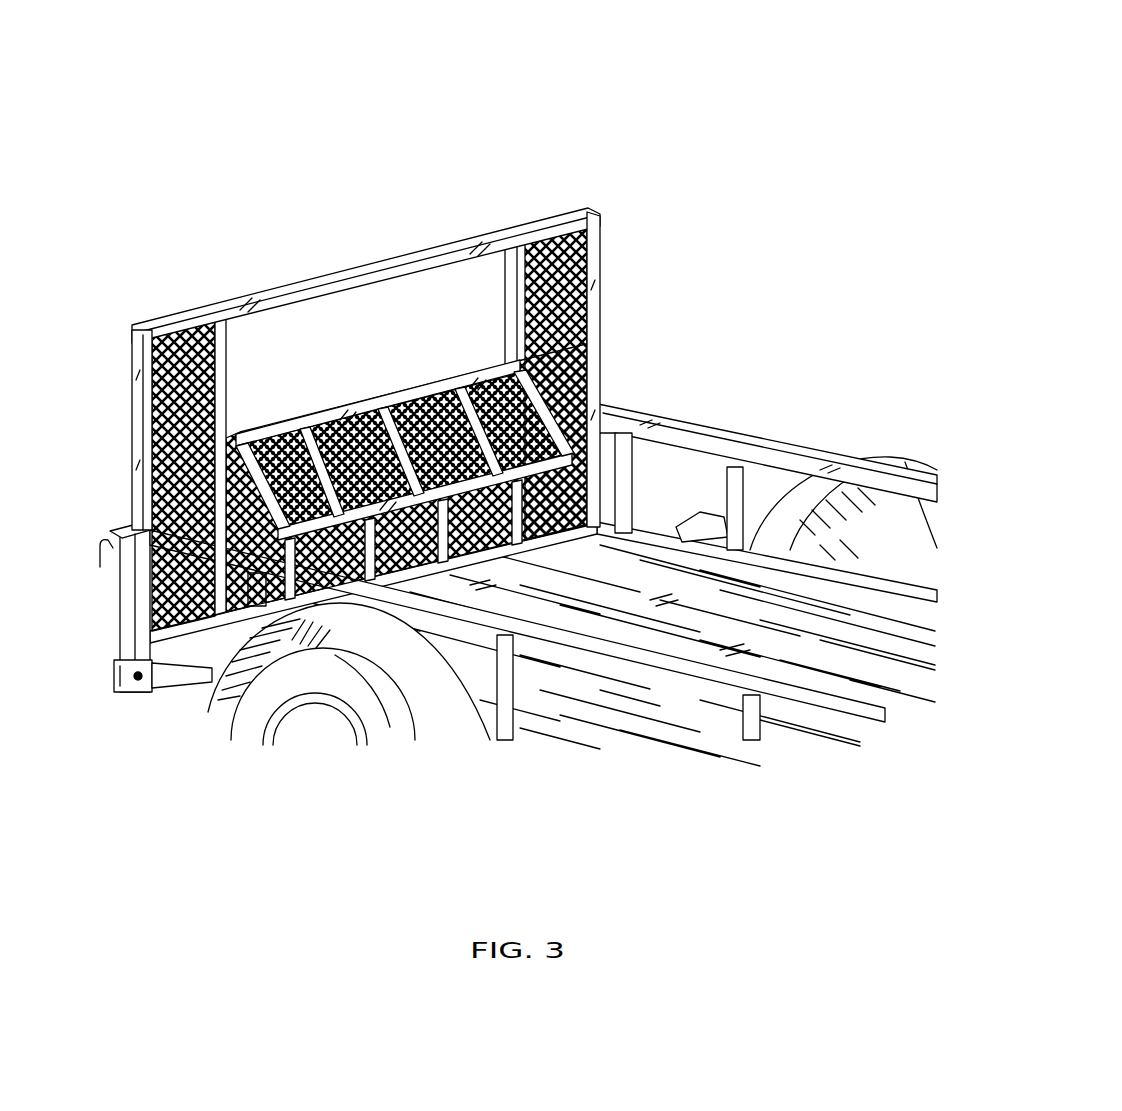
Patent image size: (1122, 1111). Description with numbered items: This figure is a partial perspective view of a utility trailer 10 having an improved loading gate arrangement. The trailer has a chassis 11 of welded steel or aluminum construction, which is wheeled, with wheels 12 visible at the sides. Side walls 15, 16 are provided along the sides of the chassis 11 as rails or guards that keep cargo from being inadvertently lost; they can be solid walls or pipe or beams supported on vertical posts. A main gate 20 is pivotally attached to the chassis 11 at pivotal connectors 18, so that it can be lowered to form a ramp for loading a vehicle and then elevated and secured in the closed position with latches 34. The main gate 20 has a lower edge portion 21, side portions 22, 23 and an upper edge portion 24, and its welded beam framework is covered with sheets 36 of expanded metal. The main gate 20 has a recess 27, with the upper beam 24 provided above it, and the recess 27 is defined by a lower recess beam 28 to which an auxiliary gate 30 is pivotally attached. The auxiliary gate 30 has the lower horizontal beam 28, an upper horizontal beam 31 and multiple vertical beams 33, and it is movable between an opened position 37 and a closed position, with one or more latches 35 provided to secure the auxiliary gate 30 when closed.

The utility trailer 10 is at (250, 85).
The chassis 11 is at (194, 693).
The wheels 12 is at (900, 452).
The side wall 15 is at (710, 445).
The side wall 16 is at (783, 703).
The pivotal connectors 18 is at (147, 638).
The main gate 20 is at (370, 371).
The lower edge portion 21 is at (600, 519).
The side portion 22 is at (597, 252).
The side portion 23 is at (138, 455).
The upper edge portion 24 is at (325, 282).
The recess 27 is at (480, 279).
The lower recess beam 28 is at (462, 418).
The auxiliary gate 30 is at (500, 366).
The upper horizontal beam 31 is at (580, 440).
The vertical beams 33 is at (468, 390).
The latches 34 is at (100, 551).
The latches 35 is at (250, 455).
The sheets of expanded metal 36 is at (540, 240).
The opened position 37 is at (415, 190).